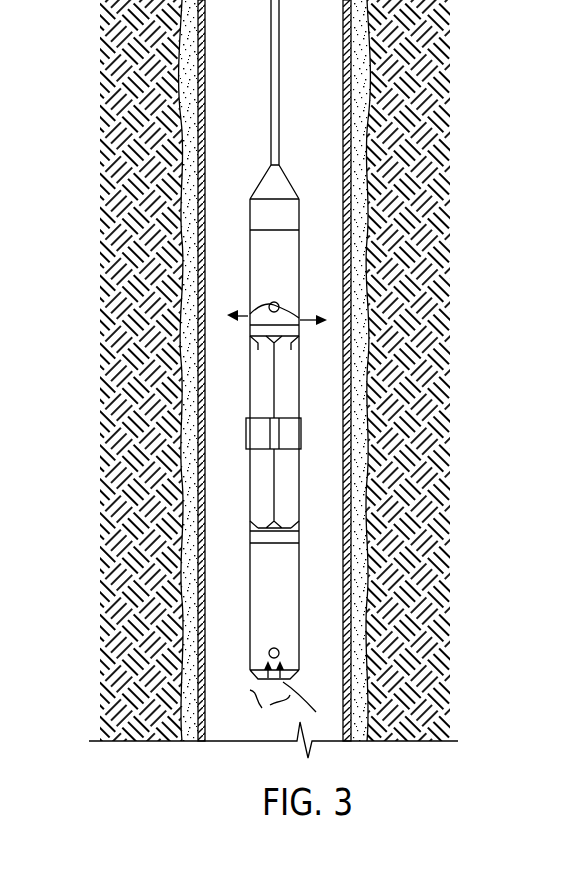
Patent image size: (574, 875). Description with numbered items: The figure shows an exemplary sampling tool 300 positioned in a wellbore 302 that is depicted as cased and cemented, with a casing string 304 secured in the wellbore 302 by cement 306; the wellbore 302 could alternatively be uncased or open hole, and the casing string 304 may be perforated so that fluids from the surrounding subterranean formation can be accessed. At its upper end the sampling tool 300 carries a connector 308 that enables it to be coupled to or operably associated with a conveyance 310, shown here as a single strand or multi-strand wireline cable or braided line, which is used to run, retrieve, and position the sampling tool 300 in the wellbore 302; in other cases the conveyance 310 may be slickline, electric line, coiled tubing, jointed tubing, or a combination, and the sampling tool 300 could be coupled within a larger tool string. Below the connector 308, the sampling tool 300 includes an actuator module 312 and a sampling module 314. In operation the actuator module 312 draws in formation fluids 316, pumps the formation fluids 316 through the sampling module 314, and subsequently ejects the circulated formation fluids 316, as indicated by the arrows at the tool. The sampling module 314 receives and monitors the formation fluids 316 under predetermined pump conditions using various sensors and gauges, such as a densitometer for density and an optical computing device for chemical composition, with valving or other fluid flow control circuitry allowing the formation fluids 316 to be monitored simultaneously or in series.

The sampling tool 300 is at (302, 120).
The wellbore 302 is at (373, 105).
The casing string 304 is at (347, 160).
The cement 306 is at (363, 225).
The connector 308 is at (258, 217).
The conveyance 310 is at (271, 94).
The actuator module 312 is at (260, 268).
The sampling module 314 is at (260, 389).
The formation fluids 316 is at (243, 317).